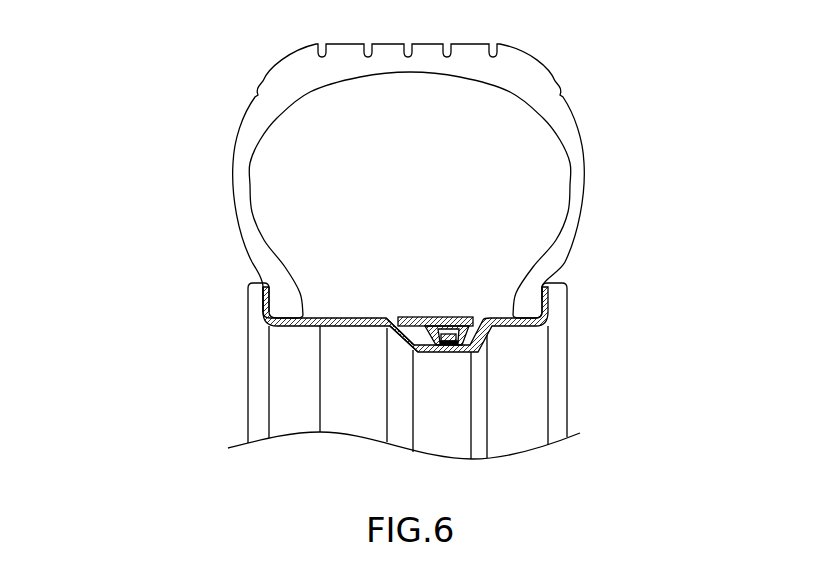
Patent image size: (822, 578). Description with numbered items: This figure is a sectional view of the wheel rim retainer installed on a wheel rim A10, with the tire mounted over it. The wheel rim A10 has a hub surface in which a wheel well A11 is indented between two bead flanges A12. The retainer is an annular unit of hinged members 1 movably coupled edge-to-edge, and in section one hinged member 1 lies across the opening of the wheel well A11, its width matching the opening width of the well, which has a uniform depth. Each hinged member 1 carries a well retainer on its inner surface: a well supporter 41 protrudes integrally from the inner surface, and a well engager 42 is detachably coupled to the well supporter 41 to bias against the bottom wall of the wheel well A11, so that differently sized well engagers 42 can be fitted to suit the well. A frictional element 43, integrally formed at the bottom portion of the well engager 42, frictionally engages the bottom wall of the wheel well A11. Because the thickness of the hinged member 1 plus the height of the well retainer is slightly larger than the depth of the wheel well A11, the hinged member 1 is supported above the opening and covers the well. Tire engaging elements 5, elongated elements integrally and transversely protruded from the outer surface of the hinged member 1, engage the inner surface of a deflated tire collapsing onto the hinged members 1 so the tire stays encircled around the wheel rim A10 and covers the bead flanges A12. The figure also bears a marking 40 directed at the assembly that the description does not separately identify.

The hinged member 1 is at (400, 322).
The tire engaging element 5 is at (473, 318).
The tire and wheel assembly 40 is at (708, 278).
The well supporter 41 is at (462, 328).
The well engager 42 is at (462, 337).
The frictional element 43 is at (452, 345).
The wheel rim A10 is at (130, 392).
The wheel well A11 is at (398, 341).
The bead flange A12 is at (258, 300).